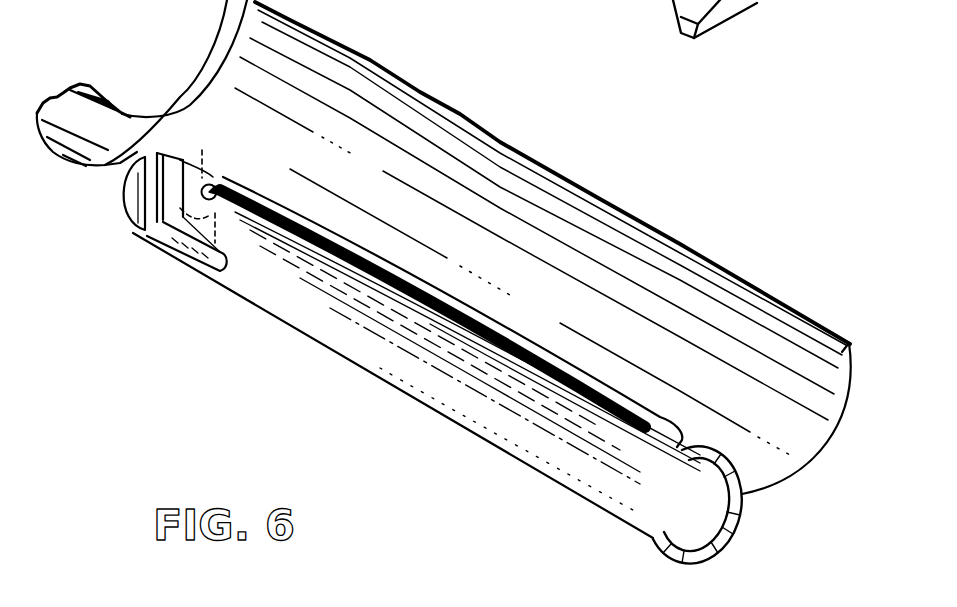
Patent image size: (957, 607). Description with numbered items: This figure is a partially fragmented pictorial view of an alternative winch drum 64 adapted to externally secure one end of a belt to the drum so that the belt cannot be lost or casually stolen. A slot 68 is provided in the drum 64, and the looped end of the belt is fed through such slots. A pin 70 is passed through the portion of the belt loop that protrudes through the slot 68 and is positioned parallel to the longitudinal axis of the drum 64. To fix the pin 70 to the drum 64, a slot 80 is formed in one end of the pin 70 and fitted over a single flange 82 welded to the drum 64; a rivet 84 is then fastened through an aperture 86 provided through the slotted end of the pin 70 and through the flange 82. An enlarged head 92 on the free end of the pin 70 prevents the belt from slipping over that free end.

The winch drum 64 is at (785, 432).
The slot 68 is at (454, 300).
The pin 70 is at (386, 385).
The slot 80 is at (212, 274).
The flange 82 is at (140, 193).
The rivet 84 is at (216, 185).
The aperture 86 is at (202, 148).
The enlarged head 92 is at (722, 518).